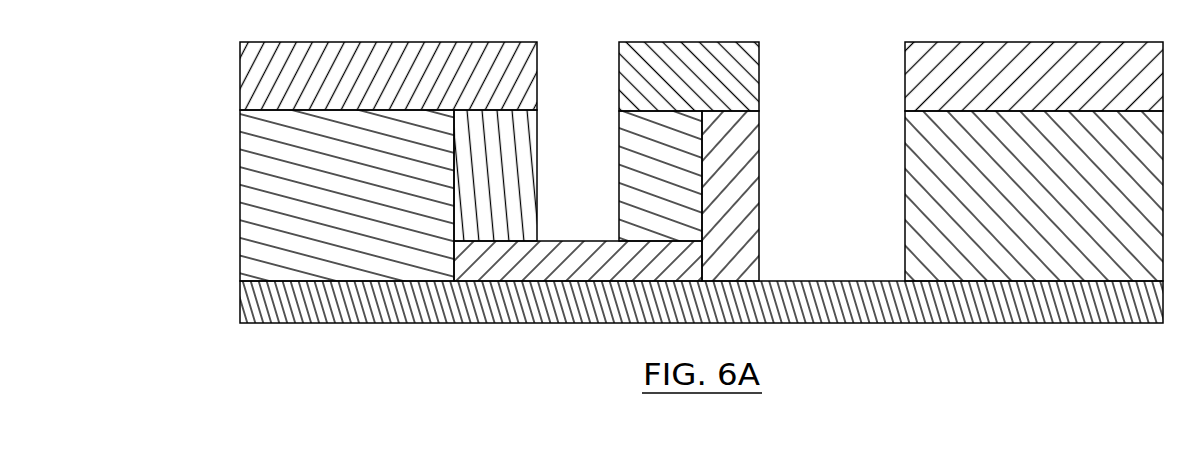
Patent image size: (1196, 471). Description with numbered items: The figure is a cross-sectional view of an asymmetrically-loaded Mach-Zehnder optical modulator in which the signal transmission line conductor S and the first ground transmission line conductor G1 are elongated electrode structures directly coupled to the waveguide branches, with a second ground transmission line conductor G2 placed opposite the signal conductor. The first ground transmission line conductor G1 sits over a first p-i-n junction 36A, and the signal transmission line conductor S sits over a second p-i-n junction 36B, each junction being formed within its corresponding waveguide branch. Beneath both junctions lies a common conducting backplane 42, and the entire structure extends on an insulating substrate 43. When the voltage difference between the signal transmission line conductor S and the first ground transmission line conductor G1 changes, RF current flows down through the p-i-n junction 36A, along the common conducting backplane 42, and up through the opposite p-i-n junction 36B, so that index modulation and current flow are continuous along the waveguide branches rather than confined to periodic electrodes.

The first ground transmission line conductor G1 is at (389, 87).
The second ground transmission line conductor G2 is at (1054, 90).
The signal transmission line conductor S is at (699, 90).
The p-i-n junction 36A is at (519, 190).
The p-i-n junction 36B is at (683, 190).
The common conducting backplane 42 is at (589, 273).
The insulating substrate 43 is at (589, 316).